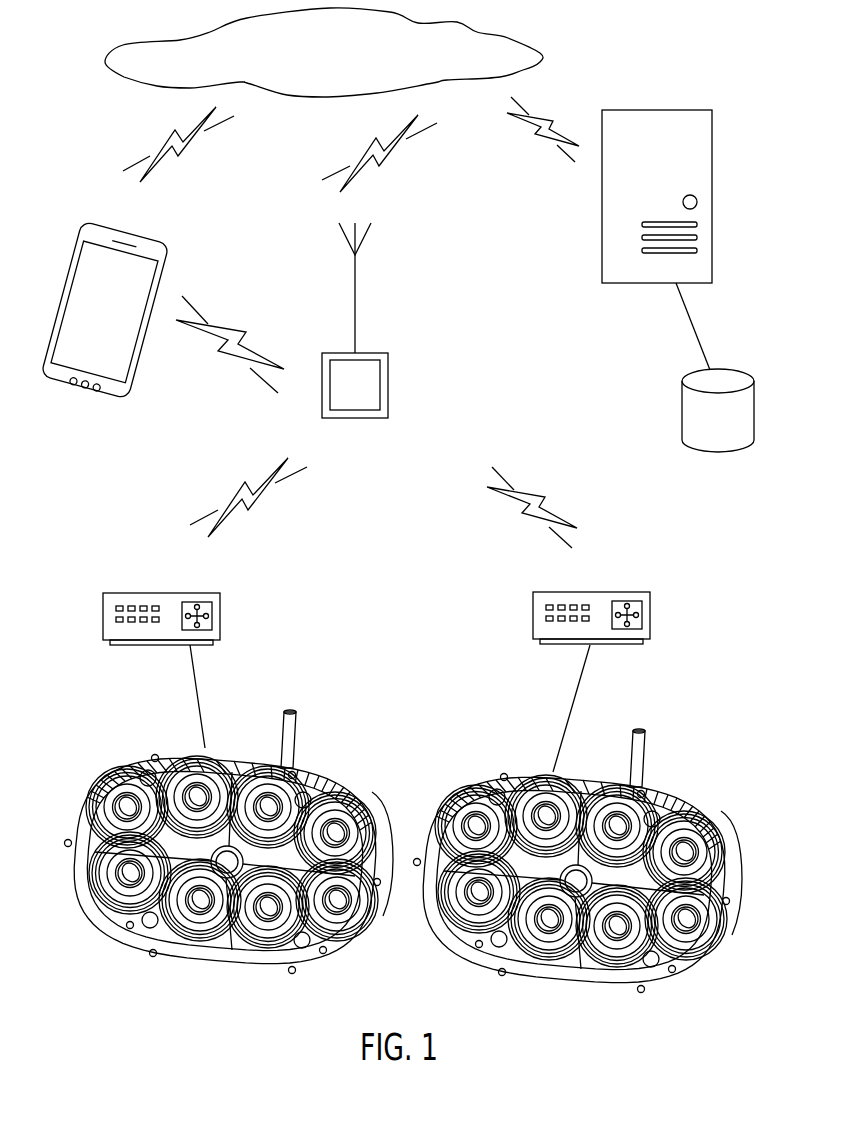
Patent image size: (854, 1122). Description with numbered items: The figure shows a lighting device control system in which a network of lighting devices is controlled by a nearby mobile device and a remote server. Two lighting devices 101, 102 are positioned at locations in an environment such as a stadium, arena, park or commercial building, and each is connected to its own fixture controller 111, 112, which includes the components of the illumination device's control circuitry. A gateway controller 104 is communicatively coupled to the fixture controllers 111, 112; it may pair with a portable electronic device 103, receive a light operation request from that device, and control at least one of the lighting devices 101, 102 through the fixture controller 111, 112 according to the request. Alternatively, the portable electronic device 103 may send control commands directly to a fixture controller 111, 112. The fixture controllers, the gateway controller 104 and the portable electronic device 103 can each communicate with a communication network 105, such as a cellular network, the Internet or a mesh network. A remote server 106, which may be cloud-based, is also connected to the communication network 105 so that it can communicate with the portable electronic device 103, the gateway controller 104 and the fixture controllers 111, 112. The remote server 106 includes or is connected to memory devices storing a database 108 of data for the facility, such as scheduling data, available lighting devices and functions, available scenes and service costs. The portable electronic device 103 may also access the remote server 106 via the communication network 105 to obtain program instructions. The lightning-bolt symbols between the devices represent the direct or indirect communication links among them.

The lighting device 101 is at (178, 960).
The additional lighting device 102 is at (705, 815).
The portable electronic device 103 is at (168, 253).
The gateway controller 104 is at (388, 375).
The communication network 105 is at (283, 97).
The remote server 106 is at (600, 232).
The database 108 is at (703, 453).
The fixture controller 111 is at (222, 615).
The fixture controller 112 is at (650, 612).